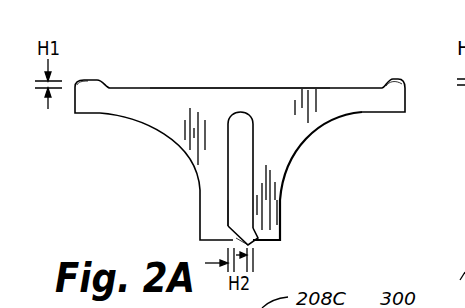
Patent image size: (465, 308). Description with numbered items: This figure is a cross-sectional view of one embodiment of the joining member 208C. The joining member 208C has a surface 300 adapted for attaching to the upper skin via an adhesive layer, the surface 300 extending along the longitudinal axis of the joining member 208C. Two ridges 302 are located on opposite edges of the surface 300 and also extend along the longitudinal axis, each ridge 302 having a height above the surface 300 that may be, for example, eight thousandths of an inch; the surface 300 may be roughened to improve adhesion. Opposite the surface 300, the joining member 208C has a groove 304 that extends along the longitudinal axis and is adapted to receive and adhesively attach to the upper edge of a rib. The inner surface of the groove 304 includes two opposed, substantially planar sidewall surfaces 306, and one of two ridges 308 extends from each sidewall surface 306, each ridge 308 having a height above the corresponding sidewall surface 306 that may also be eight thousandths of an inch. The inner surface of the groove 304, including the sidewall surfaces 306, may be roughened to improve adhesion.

The joining member 208C is at (207, 83).
The surface 300 is at (339, 87).
The ridges 302 is at (97, 81).
The groove 304 is at (232, 155).
The sidewall surfaces 306 is at (256, 216).
The ridges 308 is at (256, 234).